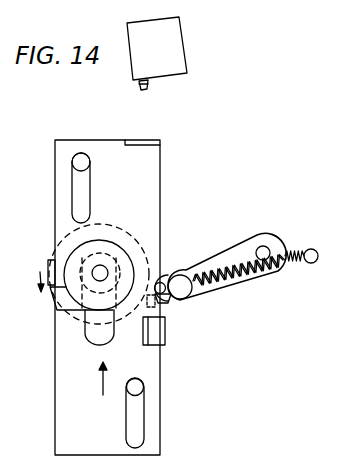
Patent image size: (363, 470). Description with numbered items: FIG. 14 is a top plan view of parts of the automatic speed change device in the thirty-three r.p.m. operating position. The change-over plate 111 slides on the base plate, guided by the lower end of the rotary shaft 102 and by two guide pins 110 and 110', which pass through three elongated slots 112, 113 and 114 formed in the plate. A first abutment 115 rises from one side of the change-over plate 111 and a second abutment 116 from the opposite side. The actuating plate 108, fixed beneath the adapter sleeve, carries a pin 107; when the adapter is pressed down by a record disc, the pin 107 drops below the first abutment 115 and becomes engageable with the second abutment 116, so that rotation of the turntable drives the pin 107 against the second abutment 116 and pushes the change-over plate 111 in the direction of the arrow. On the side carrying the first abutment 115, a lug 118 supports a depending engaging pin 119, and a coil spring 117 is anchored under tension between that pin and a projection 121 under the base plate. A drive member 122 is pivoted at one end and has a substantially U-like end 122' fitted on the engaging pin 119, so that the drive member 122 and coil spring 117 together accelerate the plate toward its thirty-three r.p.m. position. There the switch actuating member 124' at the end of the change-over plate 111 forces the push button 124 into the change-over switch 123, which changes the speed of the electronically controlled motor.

The rotary shaft 102 is at (110, 266).
The pin 107 is at (56, 293).
The actuating plate 108 is at (78, 333).
The guide pin 110 is at (103, 188).
The guide pin 110' is at (170, 408).
The change-over plate 111 is at (161, 160).
The elongated slot 112 is at (101, 336).
The elongated slot 113 is at (83, 190).
The elongated slot 114 is at (140, 413).
The first abutment 115 is at (161, 332).
The second abutment 116 is at (50, 278).
The coil spring 117 is at (297, 252).
The lug 118 is at (172, 300).
The engaging pin 119 is at (168, 272).
The projection 121 is at (311, 264).
The drive member 122 is at (227, 255).
The U-like end 122' is at (194, 238).
The change-over switch 123 is at (180, 39).
The push button 124 is at (174, 93).
The switch actuating member 124' is at (120, 125).